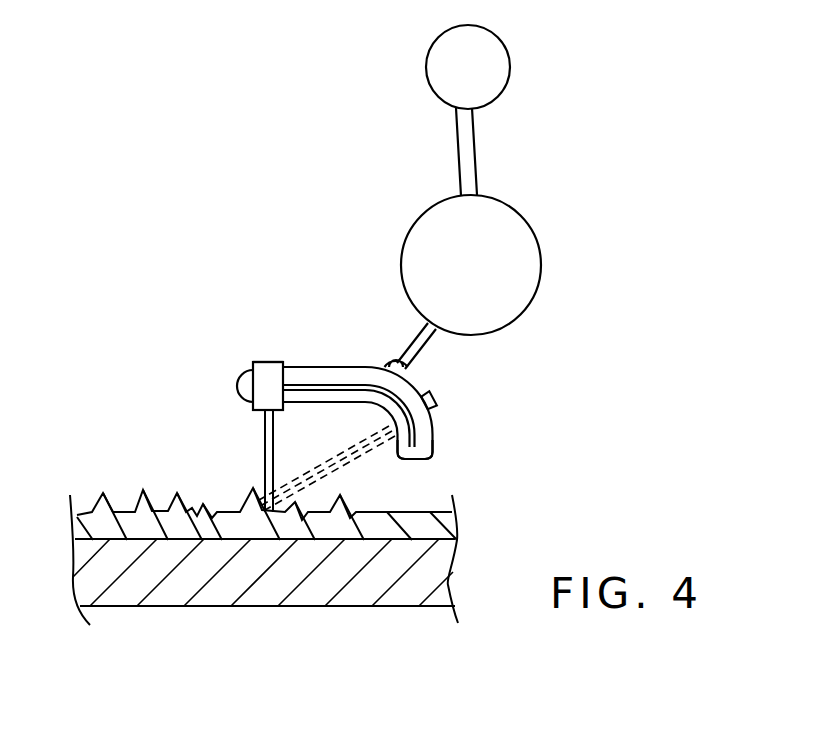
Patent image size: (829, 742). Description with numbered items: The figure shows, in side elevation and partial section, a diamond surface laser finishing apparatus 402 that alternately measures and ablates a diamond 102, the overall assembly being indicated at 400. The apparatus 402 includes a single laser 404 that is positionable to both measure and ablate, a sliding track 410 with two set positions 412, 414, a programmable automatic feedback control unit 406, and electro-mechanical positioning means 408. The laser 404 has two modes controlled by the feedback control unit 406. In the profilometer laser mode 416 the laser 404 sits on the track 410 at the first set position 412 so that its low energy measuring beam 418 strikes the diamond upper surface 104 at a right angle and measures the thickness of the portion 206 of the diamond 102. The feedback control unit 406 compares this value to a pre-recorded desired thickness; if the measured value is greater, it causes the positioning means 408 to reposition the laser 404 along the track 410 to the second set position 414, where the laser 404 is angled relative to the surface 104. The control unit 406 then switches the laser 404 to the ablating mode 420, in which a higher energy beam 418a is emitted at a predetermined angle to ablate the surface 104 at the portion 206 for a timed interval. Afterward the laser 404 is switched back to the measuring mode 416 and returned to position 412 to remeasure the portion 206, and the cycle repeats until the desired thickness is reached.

The diamond 102 is at (452, 518).
The diamond surface 104 is at (90, 513).
The portion of the diamond 206 is at (262, 495).
The laser processing assembly 400 is at (133, 219).
The diamond surface laser finishing apparatus 402 is at (296, 241).
The laser 404 is at (235, 372).
The programmable automatic feedback control unit 406 is at (523, 237).
The electro-mechanical positioning means 408 is at (457, 140).
The sliding track 410 is at (433, 444).
The first set position 412 is at (293, 367).
The second set position 414 is at (412, 460).
The profilometer laser mode 416 is at (270, 361).
The low energy beam 418 is at (265, 443).
The higher energy beam 418a is at (320, 467).
The ablating mode 420 is at (431, 410).